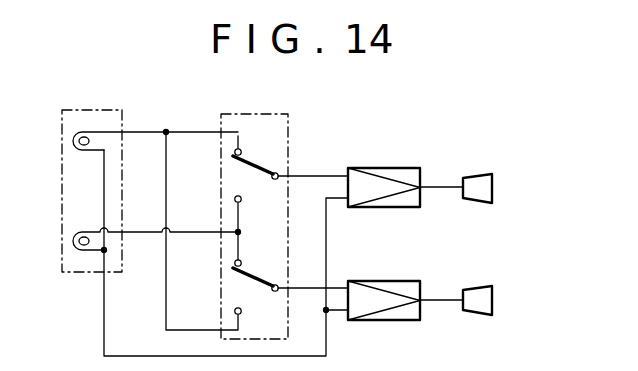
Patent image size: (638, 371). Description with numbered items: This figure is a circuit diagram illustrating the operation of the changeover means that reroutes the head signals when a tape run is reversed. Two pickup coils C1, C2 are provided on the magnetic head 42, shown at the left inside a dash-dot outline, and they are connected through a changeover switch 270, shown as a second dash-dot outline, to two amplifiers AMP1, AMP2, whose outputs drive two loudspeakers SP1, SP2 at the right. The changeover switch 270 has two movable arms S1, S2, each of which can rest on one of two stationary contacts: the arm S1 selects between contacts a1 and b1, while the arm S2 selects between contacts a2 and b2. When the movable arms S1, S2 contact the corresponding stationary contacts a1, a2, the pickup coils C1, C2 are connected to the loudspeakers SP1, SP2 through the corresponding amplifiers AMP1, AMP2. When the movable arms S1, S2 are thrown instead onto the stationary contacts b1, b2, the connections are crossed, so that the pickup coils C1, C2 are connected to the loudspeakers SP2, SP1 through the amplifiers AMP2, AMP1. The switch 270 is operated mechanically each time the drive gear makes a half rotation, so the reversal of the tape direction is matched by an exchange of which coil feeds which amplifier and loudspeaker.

The magnetic head 42 is at (96, 112).
The changeover switch 270 is at (252, 115).
The pickup coil C1 is at (75, 141).
The pickup coil C2 is at (75, 241).
The stationary contact a1 is at (232, 151).
The stationary contact b1 is at (232, 199).
The stationary contact a2 is at (232, 262).
The stationary contact b2 is at (232, 311).
The movable arm S1 is at (263, 173).
The movable arm S2 is at (263, 283).
The amplifier AMP1 is at (399, 168).
The amplifier AMP2 is at (399, 279).
The loudspeaker SP1 is at (492, 187).
The loudspeaker SP2 is at (492, 300).